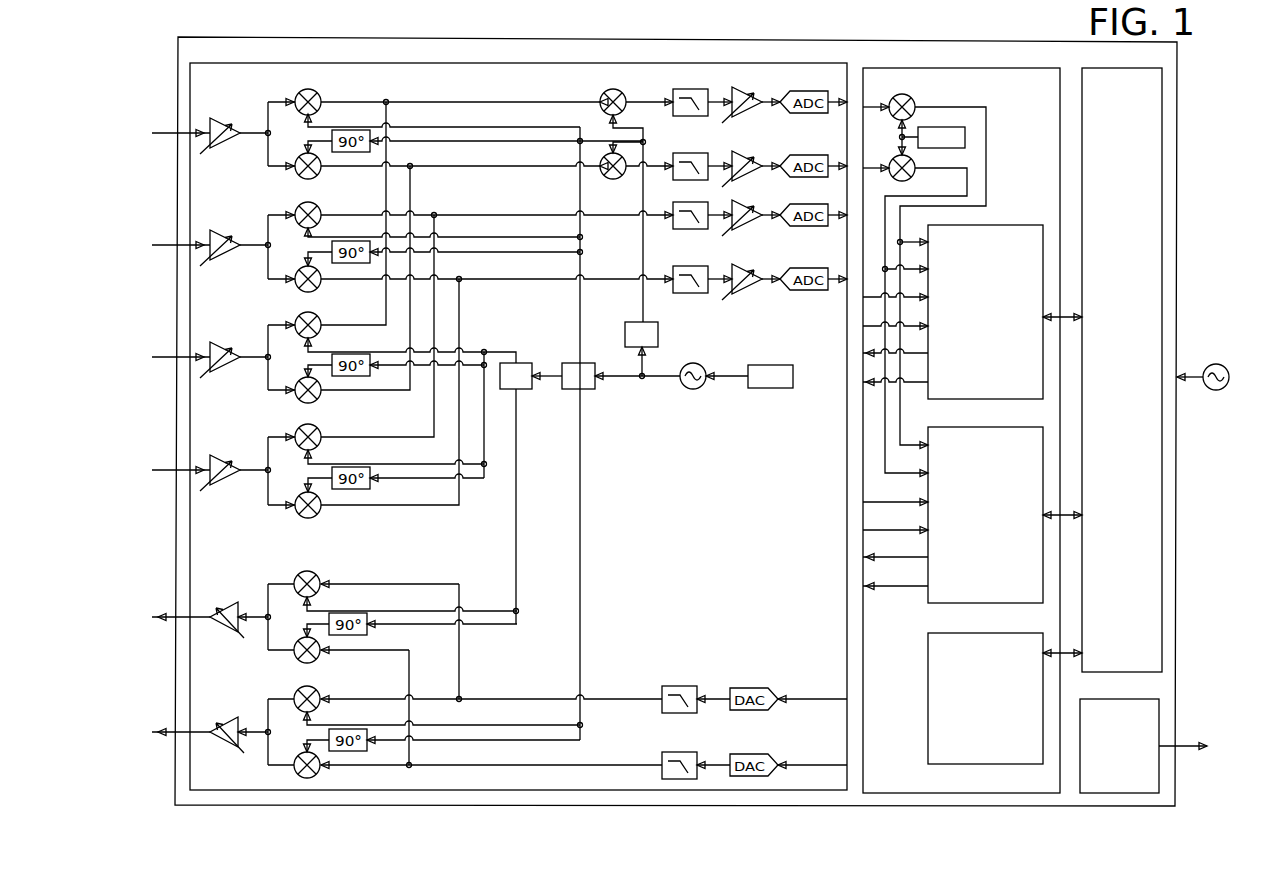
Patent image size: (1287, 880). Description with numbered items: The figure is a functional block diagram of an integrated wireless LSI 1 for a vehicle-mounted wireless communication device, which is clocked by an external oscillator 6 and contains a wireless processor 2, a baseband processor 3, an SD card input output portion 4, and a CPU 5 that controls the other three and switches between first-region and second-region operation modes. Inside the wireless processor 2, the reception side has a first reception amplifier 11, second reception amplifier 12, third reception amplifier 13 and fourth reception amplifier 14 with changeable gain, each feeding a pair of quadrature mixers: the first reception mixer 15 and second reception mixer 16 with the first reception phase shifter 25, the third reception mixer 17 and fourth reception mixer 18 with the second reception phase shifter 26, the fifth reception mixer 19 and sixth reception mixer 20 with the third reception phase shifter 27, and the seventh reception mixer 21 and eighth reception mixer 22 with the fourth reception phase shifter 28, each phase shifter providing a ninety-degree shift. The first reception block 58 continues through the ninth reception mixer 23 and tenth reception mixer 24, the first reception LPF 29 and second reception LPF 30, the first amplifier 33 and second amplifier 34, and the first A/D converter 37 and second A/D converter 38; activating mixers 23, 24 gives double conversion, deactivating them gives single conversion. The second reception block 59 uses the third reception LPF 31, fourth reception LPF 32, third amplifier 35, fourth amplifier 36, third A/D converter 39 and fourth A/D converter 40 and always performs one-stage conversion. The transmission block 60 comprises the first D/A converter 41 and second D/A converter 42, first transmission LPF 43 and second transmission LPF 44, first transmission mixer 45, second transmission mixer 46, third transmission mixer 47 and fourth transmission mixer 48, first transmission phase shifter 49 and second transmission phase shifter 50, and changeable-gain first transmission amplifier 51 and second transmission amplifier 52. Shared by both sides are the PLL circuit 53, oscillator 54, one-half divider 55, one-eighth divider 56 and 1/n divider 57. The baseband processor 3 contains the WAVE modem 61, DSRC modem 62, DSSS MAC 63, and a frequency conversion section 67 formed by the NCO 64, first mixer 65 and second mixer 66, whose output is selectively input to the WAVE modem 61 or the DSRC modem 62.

The integrated wireless LSI 1 is at (178, 60).
The wireless processor 2 is at (532, 64).
The baseband processor 3 is at (958, 68).
The SD card input output portion 4 is at (1115, 699).
The central processing unit 5 is at (1108, 68).
The oscillator 6 is at (1216, 391).
The first reception amplifier 11 is at (216, 120).
The second reception amplifier 12 is at (216, 232).
The third reception amplifier 13 is at (216, 345).
The fourth reception amplifier 14 is at (216, 458).
The first reception mixer 15 is at (317, 93).
The second reception mixer 16 is at (317, 176).
The third reception mixer 17 is at (317, 206).
The fourth reception mixer 18 is at (317, 289).
The fifth reception mixer 19 is at (317, 316).
The sixth reception mixer 20 is at (317, 400).
The seventh reception mixer 21 is at (317, 428).
The eighth reception mixer 22 is at (317, 515).
The ninth reception mixer 23 is at (630, 86).
The tenth reception mixer 24 is at (613, 180).
The first reception phase shifter 25 is at (326, 135).
The second reception phase shifter 26 is at (326, 246).
The third reception phase shifter 27 is at (326, 359).
The fourth reception phase shifter 28 is at (326, 472).
The first reception low-pass filter 29 is at (691, 78).
The second reception low-pass filter 30 is at (688, 153).
The third reception low-pass filter 31 is at (688, 229).
The fourth reception low-pass filter 32 is at (688, 293).
The first amplifier 33 is at (750, 80).
The second amplifier 34 is at (740, 156).
The third amplifier 35 is at (745, 229).
The fourth amplifier 36 is at (745, 293).
The first A/D converter 37 is at (812, 80).
The second A/D converter 38 is at (808, 156).
The third A/D converter 39 is at (808, 228).
The fourth A/D converter 40 is at (808, 292).
The first D/A converter 41 is at (755, 688).
The second D/A converter 42 is at (755, 754).
The first transmission low-pass filter 43 is at (678, 686).
The second transmission low-pass filter 44 is at (678, 752).
The first transmission mixer 45 is at (316, 690).
The second transmission mixer 46 is at (316, 775).
The third transmission mixer 47 is at (316, 575).
The fourth transmission mixer 48 is at (316, 660).
The first transmission phase shifter 49 is at (326, 734).
The second transmission phase shifter 50 is at (326, 619).
The first transmission amplifier 51 is at (218, 720).
The second transmission amplifier 52 is at (218, 605).
The PLL circuit 53 is at (770, 388).
The oscillator 54 is at (693, 389).
The 1/2 divider 55 is at (592, 389).
The 1/8 divider 56 is at (528, 389).
The 1/n divider 57 is at (658, 334).
The first reception block 58 is at (488, 98).
The second reception block 59 is at (485, 201).
The transmission block 60 is at (407, 657).
The WAVE modem 61 is at (985, 428).
The DSRC modem 62 is at (988, 226).
The DSSS MAC 63 is at (985, 633).
The numerical controlled oscillator 64 is at (932, 150).
The first mixer 65 is at (912, 98).
The second mixer 66 is at (912, 178).
The frequency conversion section 67 is at (958, 281).